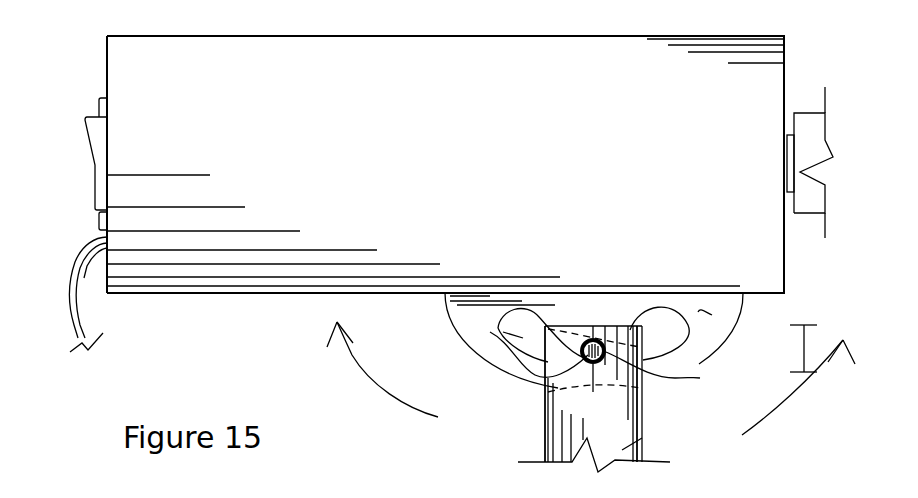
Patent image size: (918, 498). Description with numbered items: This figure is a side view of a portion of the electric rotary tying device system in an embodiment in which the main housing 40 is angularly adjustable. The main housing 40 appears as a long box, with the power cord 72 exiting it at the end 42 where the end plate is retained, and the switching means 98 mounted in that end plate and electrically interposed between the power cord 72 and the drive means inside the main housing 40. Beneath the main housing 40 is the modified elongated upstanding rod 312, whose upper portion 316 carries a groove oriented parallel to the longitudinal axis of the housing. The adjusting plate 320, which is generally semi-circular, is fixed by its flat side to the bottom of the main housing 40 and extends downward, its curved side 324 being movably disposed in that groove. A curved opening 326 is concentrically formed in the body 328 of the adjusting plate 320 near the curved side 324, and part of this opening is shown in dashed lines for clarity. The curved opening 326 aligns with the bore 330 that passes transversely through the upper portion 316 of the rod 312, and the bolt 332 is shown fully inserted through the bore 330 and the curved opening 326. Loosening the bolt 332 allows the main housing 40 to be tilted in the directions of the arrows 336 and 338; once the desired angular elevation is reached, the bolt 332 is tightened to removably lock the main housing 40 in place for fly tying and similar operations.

The main housing 40 is at (712, 68).
The end of the main housing 42 is at (107, 56).
The switching means 98 is at (95, 186).
The power cord 72 is at (73, 297).
The modified elongated upstanding rod 312 is at (622, 450).
The upper portion 316 is at (803, 350).
The adjusting plate 320 is at (447, 311).
The curved side 324 is at (700, 378).
The curved opening 326 is at (490, 332).
The body 328 is at (712, 315).
The bore 330 is at (530, 372).
The bolt 332 is at (605, 358).
The arrow 336 is at (378, 396).
The arrow 338 is at (824, 388).